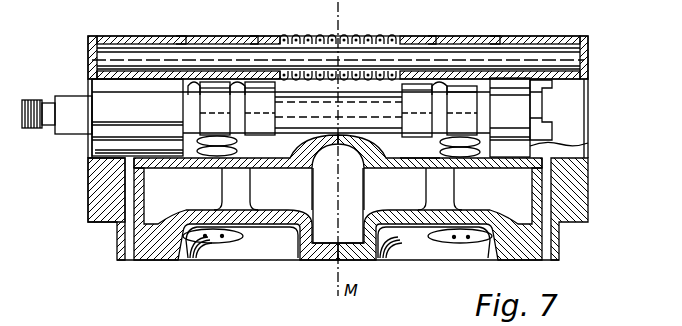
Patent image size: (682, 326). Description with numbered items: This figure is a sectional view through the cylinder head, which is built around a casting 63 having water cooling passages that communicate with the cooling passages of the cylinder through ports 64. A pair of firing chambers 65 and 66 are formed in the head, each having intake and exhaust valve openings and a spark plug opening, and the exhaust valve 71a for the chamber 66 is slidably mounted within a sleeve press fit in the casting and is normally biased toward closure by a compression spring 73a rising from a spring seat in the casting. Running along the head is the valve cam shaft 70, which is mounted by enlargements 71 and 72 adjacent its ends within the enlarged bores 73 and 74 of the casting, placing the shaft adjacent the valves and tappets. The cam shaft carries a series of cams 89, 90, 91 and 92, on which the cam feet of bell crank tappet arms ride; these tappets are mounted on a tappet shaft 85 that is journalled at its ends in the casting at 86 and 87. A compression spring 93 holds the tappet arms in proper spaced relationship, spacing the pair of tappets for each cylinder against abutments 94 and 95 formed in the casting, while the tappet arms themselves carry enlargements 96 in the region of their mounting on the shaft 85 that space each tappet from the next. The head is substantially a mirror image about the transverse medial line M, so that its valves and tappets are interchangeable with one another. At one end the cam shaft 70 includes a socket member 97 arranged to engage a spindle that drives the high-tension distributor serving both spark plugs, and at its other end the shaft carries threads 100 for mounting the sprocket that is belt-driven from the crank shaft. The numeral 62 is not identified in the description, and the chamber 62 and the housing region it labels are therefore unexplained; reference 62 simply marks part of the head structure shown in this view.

The housing 62 is at (110, 238).
The casting 63 is at (88, 216).
The ports 64 is at (326, 236).
The firing chamber 65 is at (248, 252).
The firing chamber 66 is at (417, 250).
The valve cam shaft 70 is at (72, 102).
The enlargement 71 is at (588, 144).
The exhaust valve 71a is at (465, 240).
The enlargement 72 is at (100, 141).
The enlarged bore 73 is at (568, 132).
The compression spring 73a is at (424, 160).
The enlarged bore 74 is at (88, 156).
The tappet shaft 85 is at (586, 57).
The journal 86 is at (97, 47).
The journal 87 is at (580, 40).
The cam 89 is at (468, 98).
The cam 90 is at (412, 95).
The cam 91 is at (266, 82).
The cam 92 is at (205, 82).
The compression spring 93 is at (345, 41).
The abutment 94 is at (495, 38).
The abutment 95 is at (182, 38).
The enlargements 96 is at (254, 37).
The socket member 97 is at (552, 104).
The threads 100 is at (35, 100).